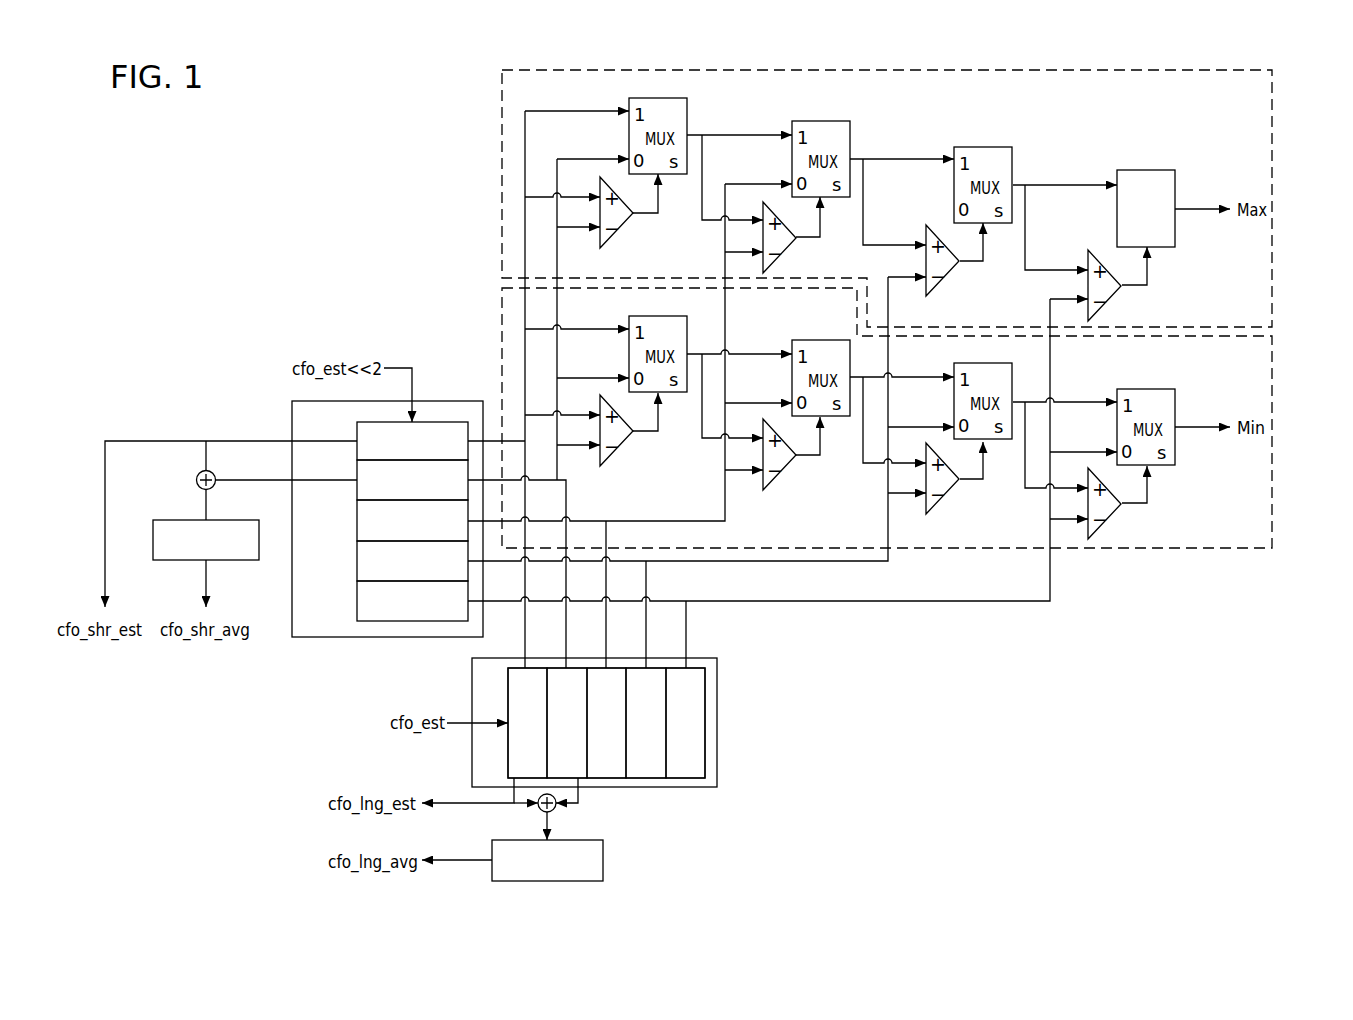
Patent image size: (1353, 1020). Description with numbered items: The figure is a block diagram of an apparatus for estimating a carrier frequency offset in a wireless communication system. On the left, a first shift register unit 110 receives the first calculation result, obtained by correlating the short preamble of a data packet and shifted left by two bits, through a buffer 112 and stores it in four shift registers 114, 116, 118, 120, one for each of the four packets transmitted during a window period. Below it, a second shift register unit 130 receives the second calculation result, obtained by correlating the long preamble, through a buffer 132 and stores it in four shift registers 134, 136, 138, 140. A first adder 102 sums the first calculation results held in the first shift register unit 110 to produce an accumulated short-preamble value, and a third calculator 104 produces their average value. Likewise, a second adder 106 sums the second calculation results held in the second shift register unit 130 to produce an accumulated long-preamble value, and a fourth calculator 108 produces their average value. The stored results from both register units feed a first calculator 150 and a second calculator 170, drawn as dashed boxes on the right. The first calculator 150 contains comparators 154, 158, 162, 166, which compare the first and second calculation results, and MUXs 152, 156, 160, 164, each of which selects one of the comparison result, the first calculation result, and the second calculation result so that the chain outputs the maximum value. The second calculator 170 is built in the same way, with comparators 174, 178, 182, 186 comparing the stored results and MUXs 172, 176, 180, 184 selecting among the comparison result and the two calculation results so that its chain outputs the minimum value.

The first adder 102 is at (199, 473).
The third calculator 104 is at (213, 520).
The second adder 106 is at (554, 810).
The fourth calculator 108 is at (603, 860).
The first shift register unit 110 is at (433, 401).
The buffer 112 is at (357, 430).
The shift register 114 is at (357, 468).
The shift register 116 is at (357, 520).
The shift register 118 is at (357, 559).
The shift register 120 is at (357, 599).
The second shift register unit 130 is at (717, 728).
The buffer 132 is at (508, 690).
The shift register 134 is at (570, 778).
The shift register 136 is at (616, 668).
The shift register 138 is at (660, 668).
The shift register 140 is at (707, 700).
The first calculator 150 is at (1272, 127).
The MUX 152 is at (665, 86).
The comparator 154 is at (621, 227).
The MUX 156 is at (828, 109).
The comparator 158 is at (784, 252).
The MUX 160 is at (975, 147).
The comparator 162 is at (947, 275).
The MUX 164 is at (1138, 170).
The comparator 166 is at (1109, 300).
The second calculator 170 is at (1272, 397).
The MUX 172 is at (665, 304).
The comparator 174 is at (621, 445).
The MUX 176 is at (828, 328).
The comparator 178 is at (784, 470).
The MUX 180 is at (975, 363).
The comparator 182 is at (947, 493).
The MUX 184 is at (1138, 389).
The comparator 186 is at (1109, 518).